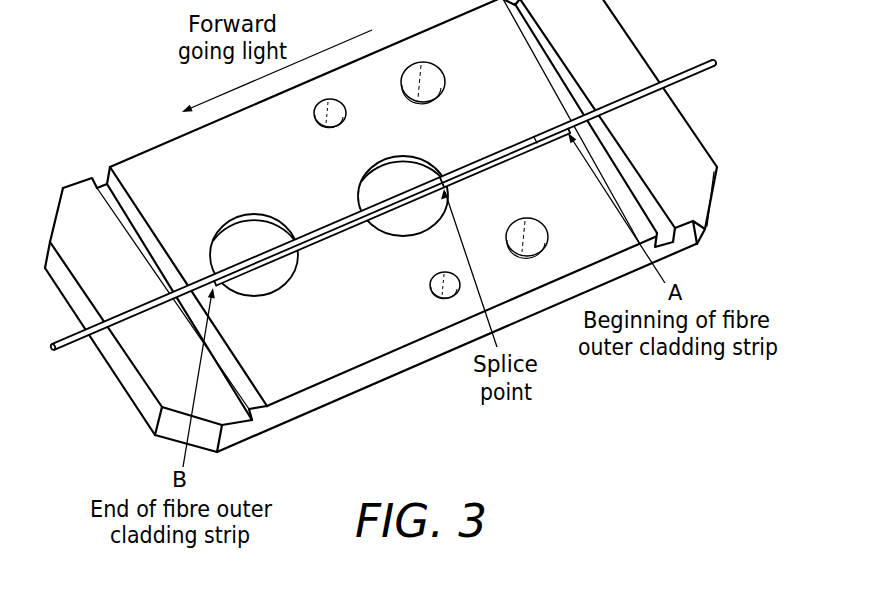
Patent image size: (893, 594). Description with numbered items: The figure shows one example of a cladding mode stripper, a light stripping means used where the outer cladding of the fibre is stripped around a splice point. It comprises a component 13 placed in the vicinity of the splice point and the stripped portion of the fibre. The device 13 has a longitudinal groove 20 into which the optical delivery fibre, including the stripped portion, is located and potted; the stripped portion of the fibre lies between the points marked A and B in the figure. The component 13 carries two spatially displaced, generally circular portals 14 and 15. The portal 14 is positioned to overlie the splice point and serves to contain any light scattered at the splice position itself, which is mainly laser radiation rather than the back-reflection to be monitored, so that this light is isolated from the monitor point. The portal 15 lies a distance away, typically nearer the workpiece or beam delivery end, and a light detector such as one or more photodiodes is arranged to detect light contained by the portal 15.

The component 13 is at (698, 236).
The portal 14 is at (398, 224).
The portal 15 is at (272, 283).
The longitudinal groove 20 is at (567, 123).